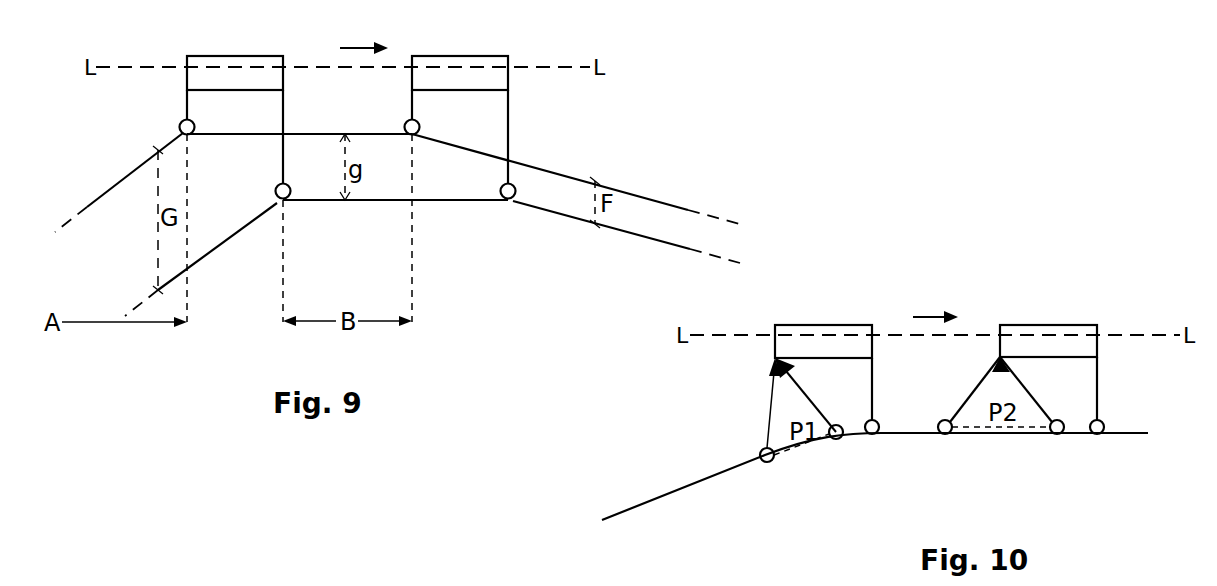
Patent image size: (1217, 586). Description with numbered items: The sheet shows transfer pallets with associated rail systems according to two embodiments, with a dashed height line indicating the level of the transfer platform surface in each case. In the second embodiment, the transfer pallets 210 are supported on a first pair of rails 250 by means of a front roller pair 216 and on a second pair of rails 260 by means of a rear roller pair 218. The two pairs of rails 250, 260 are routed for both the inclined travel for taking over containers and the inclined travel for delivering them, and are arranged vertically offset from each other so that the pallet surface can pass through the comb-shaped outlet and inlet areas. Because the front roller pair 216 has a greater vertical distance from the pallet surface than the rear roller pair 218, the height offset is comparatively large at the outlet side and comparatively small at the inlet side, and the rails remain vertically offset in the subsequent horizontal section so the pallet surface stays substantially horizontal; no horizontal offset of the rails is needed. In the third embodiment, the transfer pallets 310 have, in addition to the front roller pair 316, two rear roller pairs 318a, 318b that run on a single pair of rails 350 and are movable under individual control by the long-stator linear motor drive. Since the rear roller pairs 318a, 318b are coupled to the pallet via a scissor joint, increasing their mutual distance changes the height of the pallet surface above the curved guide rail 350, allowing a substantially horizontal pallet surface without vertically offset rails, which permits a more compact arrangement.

In FIG. 9, the transfer pallet 210 is at (245, 55).
In FIG. 9, the rear roller pair 218 is at (180, 122).
In FIG. 9, the front roller pair 216 is at (289, 200).
In FIG. 9, the second pair of rails 260 is at (107, 189).
In FIG. 9, the first pair of rails 250 is at (225, 242).
In FIG. 10, the transfer pallet 310 is at (831, 324).
In FIG. 10, the front roller pair 316 is at (878, 420).
In FIG. 10, the rear roller pair 318a is at (770, 463).
In FIG. 10, the rear roller pair 318b is at (838, 441).
In FIG. 10, the pair of rails 350 is at (705, 489).